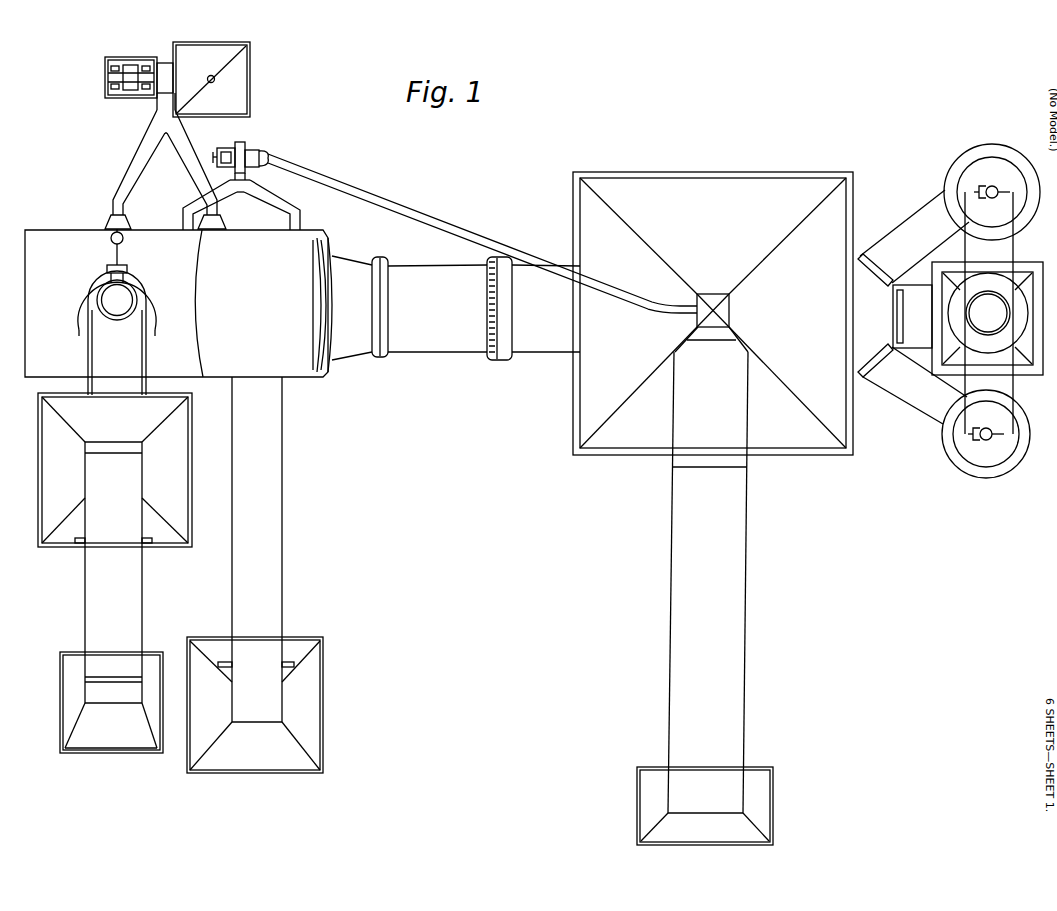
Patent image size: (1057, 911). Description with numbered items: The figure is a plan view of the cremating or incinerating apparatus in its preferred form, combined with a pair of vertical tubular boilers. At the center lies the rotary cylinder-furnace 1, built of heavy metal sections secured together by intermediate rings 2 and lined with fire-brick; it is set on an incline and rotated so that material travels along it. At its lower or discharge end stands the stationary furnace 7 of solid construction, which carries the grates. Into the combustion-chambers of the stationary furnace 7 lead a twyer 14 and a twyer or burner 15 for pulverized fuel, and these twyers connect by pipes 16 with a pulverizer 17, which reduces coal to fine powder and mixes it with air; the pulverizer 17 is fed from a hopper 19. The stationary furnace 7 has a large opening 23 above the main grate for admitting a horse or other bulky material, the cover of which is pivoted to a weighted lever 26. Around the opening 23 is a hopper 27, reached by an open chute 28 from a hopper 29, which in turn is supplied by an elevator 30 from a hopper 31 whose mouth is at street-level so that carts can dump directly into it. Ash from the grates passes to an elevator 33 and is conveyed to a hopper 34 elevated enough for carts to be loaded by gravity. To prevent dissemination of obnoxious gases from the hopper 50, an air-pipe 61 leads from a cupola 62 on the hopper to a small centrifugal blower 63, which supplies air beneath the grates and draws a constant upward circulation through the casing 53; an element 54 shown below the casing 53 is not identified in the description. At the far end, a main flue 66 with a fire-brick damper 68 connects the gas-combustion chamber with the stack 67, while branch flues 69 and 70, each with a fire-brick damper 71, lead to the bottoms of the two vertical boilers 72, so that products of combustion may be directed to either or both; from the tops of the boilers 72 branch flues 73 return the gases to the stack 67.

The rotary cylinder-furnace 1 is at (456, 302).
The intermediate rings 2 is at (387, 298).
The stationary furnace 7 is at (178, 303).
The twyer 14 is at (226, 222).
The twyer or burner 15 is at (127, 218).
The pipes 16 is at (165, 154).
The pulverizer 17 is at (139, 69).
The hopper 19 is at (250, 65).
The opening 23 is at (132, 294).
The weighted lever 26 is at (120, 254).
The hopper 27 is at (147, 327).
The open chute 28 is at (117, 347).
The hopper 29 is at (115, 470).
The elevator 30 is at (101, 572).
The hopper 31 is at (100, 702).
The elevator 33 is at (268, 549).
The hopper 34 is at (350, 690).
The hopper 50 is at (713, 313).
The casing 53 is at (720, 582).
The receptacle 54 is at (718, 806).
The air-pipe 61 is at (482, 233).
The cupola 62 is at (731, 312).
The centrifugal blower 63 is at (241, 150).
The main flue 66 is at (912, 316).
The stack 67 is at (987, 318).
The fire-brick damper 68 is at (904, 300).
The branch flue 69 is at (914, 236).
The branch flue 70 is at (915, 385).
The fire-brick dampers 71 is at (875, 315).
The vertical boilers 72 is at (991, 302).
The branch flues 73 is at (989, 313).